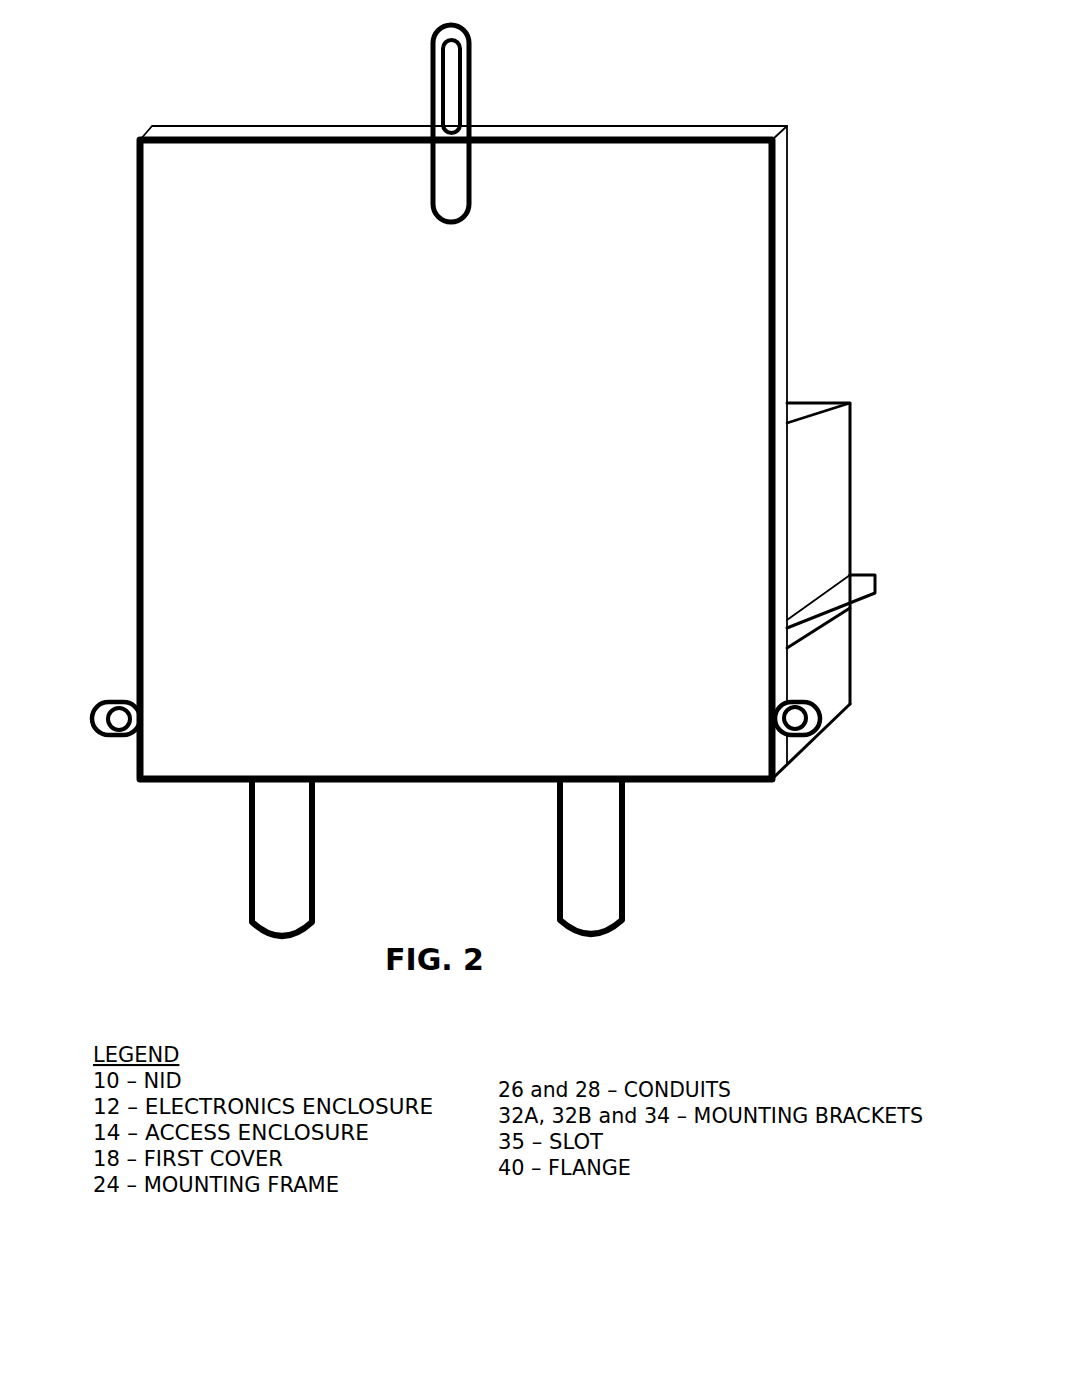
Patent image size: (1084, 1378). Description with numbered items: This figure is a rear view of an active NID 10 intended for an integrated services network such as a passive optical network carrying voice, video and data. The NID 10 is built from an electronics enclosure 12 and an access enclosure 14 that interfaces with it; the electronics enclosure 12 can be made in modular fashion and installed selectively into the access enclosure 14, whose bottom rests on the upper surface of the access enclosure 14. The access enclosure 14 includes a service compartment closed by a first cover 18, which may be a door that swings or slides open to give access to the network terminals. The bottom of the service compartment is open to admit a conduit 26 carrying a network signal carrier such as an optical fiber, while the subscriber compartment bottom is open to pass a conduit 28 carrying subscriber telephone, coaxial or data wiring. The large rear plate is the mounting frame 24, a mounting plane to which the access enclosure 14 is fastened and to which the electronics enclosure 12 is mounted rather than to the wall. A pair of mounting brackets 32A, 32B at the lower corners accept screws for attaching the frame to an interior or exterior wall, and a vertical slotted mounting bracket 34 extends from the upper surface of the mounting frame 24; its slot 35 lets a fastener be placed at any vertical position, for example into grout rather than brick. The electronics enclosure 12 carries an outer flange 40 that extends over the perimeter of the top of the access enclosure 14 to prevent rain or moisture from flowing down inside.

The active NID 10 is at (816, 123).
The electronics enclosure 12 is at (856, 422).
The access enclosure 14 is at (798, 763).
The first cover 18 is at (830, 676).
The mounting frame 24 is at (750, 250).
The conduit 26 is at (623, 896).
The conduit 28 is at (313, 898).
The mounting bracket 32A is at (808, 720).
The mounting bracket 32B is at (102, 728).
The vertical slotted mounting bracket 34 is at (469, 80).
The slot 35 is at (451, 63).
The outer flange 40 is at (866, 598).